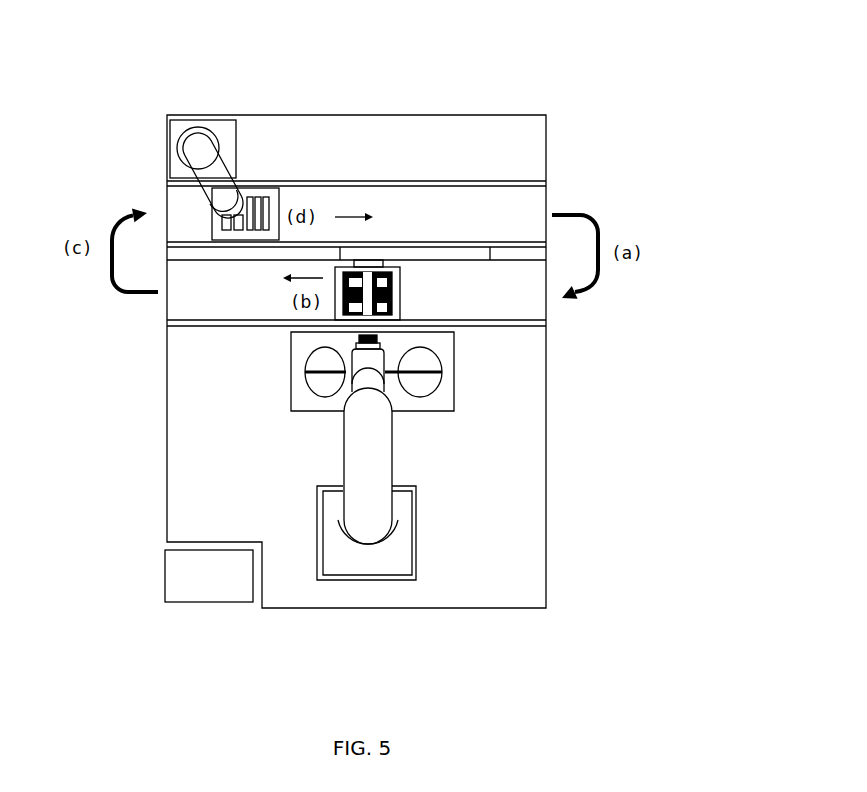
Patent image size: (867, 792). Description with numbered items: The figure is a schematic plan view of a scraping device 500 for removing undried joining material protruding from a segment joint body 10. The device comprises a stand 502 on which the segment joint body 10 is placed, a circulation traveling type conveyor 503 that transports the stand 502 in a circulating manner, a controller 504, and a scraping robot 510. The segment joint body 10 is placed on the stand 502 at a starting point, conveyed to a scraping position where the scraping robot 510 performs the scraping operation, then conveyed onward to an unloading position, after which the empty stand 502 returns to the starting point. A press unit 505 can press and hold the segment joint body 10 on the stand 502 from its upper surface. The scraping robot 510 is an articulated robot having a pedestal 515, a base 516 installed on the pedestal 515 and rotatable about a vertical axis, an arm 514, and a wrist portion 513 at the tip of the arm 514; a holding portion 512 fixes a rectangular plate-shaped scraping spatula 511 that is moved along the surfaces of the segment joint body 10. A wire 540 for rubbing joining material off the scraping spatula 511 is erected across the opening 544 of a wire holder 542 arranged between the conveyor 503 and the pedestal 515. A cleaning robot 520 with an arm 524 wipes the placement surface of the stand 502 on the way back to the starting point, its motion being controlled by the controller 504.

The scraping device 500 is at (364, 90).
The circulation traveling type conveyor 503 is at (546, 197).
The cleaning robot 520 is at (201, 102).
The arm 524 is at (210, 197).
The stand 502 is at (255, 192).
The press unit 505 is at (366, 270).
The segment joint body 10 is at (394, 280).
The wire 540 is at (256, 413).
The wire holder 542 is at (291, 400).
The opening 544 is at (322, 390).
The scraping spatula 511 is at (380, 337).
The holding portion 512 is at (382, 345).
The wrist portion 513 is at (386, 365).
The scraping robot 510 is at (487, 484).
The arm 514 is at (392, 472).
The base 516 is at (397, 528).
The pedestal 515 is at (416, 560).
The controller 504 is at (195, 602).